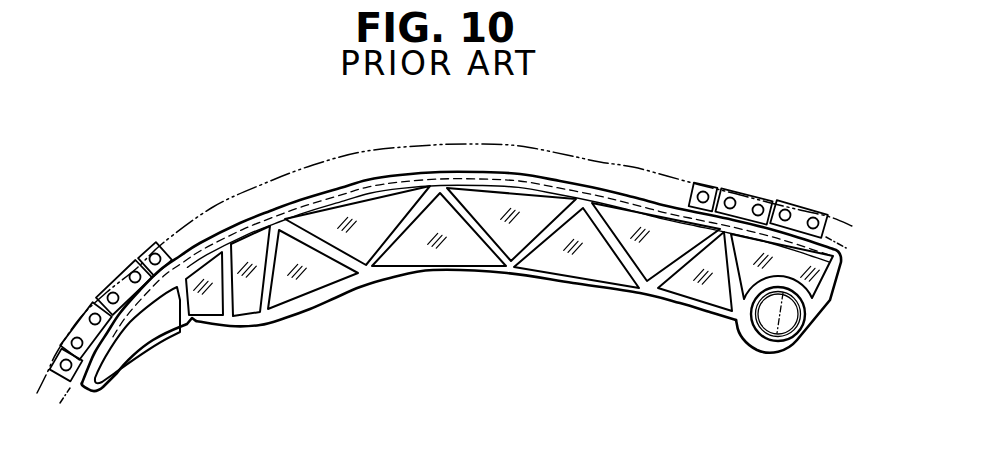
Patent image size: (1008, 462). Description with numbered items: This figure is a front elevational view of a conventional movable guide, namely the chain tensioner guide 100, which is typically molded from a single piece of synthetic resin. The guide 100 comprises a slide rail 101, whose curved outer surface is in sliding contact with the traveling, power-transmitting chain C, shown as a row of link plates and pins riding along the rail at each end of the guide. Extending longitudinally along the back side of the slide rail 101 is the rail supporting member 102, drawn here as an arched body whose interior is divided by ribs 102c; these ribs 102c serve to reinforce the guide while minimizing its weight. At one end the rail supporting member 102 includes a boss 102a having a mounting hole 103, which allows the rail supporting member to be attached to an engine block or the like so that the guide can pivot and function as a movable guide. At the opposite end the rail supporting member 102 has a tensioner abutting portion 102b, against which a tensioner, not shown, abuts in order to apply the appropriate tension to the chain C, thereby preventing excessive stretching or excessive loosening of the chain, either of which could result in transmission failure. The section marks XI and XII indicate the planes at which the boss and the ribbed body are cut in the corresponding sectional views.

The chain C is at (120, 276).
The chain tensioner guide 100 is at (492, 254).
The slide rail 101 is at (617, 200).
The rail supporting member 102 is at (544, 254).
The boss 102a is at (807, 317).
The tensioner abutting portion 102b is at (230, 330).
The ribs 102c is at (480, 222).
The mounting hole 103 is at (763, 320).
The section line XI is at (819, 181).
The section line XII is at (452, 113).